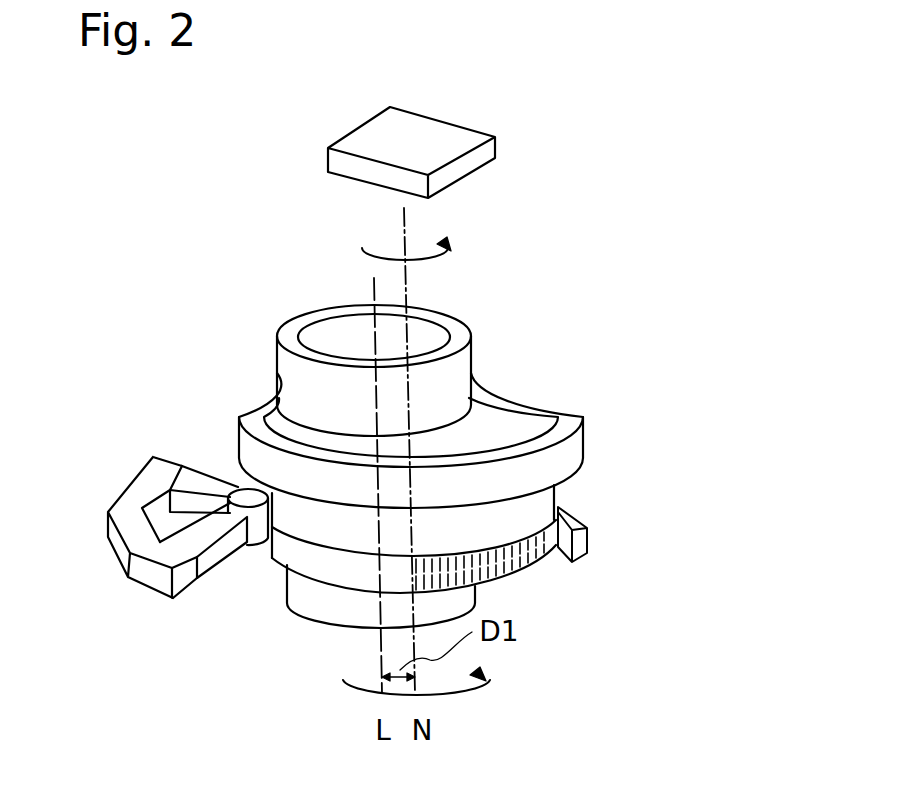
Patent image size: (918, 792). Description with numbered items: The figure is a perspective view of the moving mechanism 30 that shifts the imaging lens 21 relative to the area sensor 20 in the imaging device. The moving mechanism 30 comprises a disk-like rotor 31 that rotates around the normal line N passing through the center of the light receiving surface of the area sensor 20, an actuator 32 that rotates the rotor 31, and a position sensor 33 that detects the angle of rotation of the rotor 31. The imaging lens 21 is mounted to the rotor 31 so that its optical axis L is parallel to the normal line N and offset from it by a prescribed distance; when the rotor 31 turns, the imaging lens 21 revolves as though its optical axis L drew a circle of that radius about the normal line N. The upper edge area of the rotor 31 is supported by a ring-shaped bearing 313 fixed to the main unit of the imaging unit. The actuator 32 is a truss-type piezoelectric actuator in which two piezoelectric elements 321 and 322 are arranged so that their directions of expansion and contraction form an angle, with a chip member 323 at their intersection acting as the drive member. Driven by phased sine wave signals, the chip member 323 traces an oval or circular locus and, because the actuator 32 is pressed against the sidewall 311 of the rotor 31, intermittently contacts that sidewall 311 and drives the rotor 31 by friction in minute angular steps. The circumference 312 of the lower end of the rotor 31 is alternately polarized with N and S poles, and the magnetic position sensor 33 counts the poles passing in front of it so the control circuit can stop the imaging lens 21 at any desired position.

The area sensor 20 is at (437, 137).
The imaging lens 21 is at (338, 332).
The moving mechanism 30 is at (587, 376).
The rotor 31 is at (494, 387).
The sidewall 311 is at (555, 491).
The circumference 312 is at (523, 578).
The ring-shaped bearing 313 is at (538, 378).
The actuator 32 is at (145, 577).
The piezoelectric element 321 is at (212, 571).
The piezoelectric element 322 is at (207, 478).
The chip member 323 is at (253, 548).
The position sensor 33 is at (587, 538).